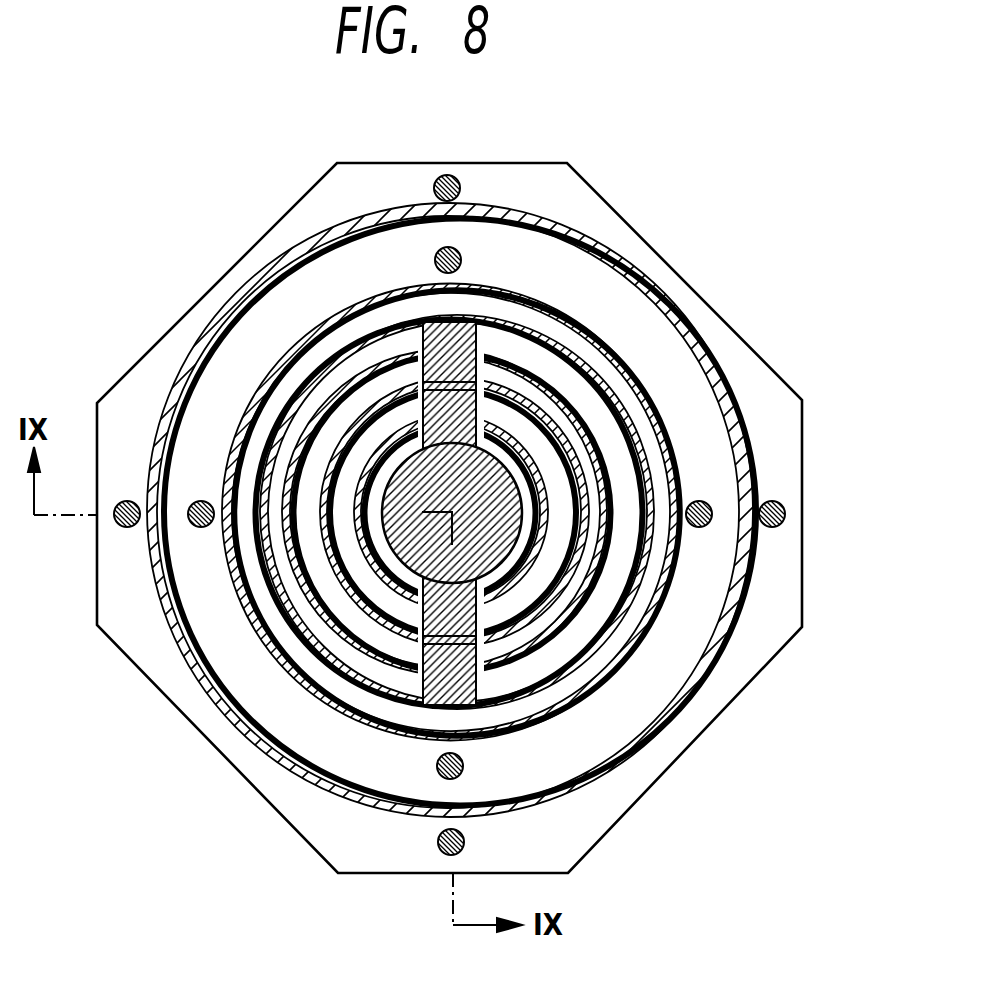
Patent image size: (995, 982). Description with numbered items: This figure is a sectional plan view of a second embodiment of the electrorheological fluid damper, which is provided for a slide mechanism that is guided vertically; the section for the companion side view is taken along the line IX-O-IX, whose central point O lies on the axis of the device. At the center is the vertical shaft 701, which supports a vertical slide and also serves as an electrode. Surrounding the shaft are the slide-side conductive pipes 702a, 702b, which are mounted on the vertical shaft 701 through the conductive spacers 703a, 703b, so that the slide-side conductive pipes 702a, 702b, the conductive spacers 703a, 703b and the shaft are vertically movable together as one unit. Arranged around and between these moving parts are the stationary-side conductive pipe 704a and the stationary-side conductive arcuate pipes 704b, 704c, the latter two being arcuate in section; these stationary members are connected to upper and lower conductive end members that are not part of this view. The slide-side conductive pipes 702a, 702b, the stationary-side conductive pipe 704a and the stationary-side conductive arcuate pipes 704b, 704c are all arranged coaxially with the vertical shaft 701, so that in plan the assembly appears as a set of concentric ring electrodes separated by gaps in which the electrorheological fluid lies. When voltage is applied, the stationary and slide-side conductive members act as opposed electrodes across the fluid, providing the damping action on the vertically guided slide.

The vertical shaft 701 is at (580, 372).
The slide-side conductive pipe 702a is at (625, 378).
The slide-side conductive pipe 702b is at (600, 442).
The conductive spacer 703a is at (562, 385).
The conductive spacer 703b is at (487, 443).
The stationary-side conductive pipe 704a is at (347, 303).
The stationary-side conductive arcuate pipe 704b is at (333, 388).
The stationary-side conductive arcuate pipe 704c is at (365, 455).
The center point of section line IX-O-IX O is at (522, 516).